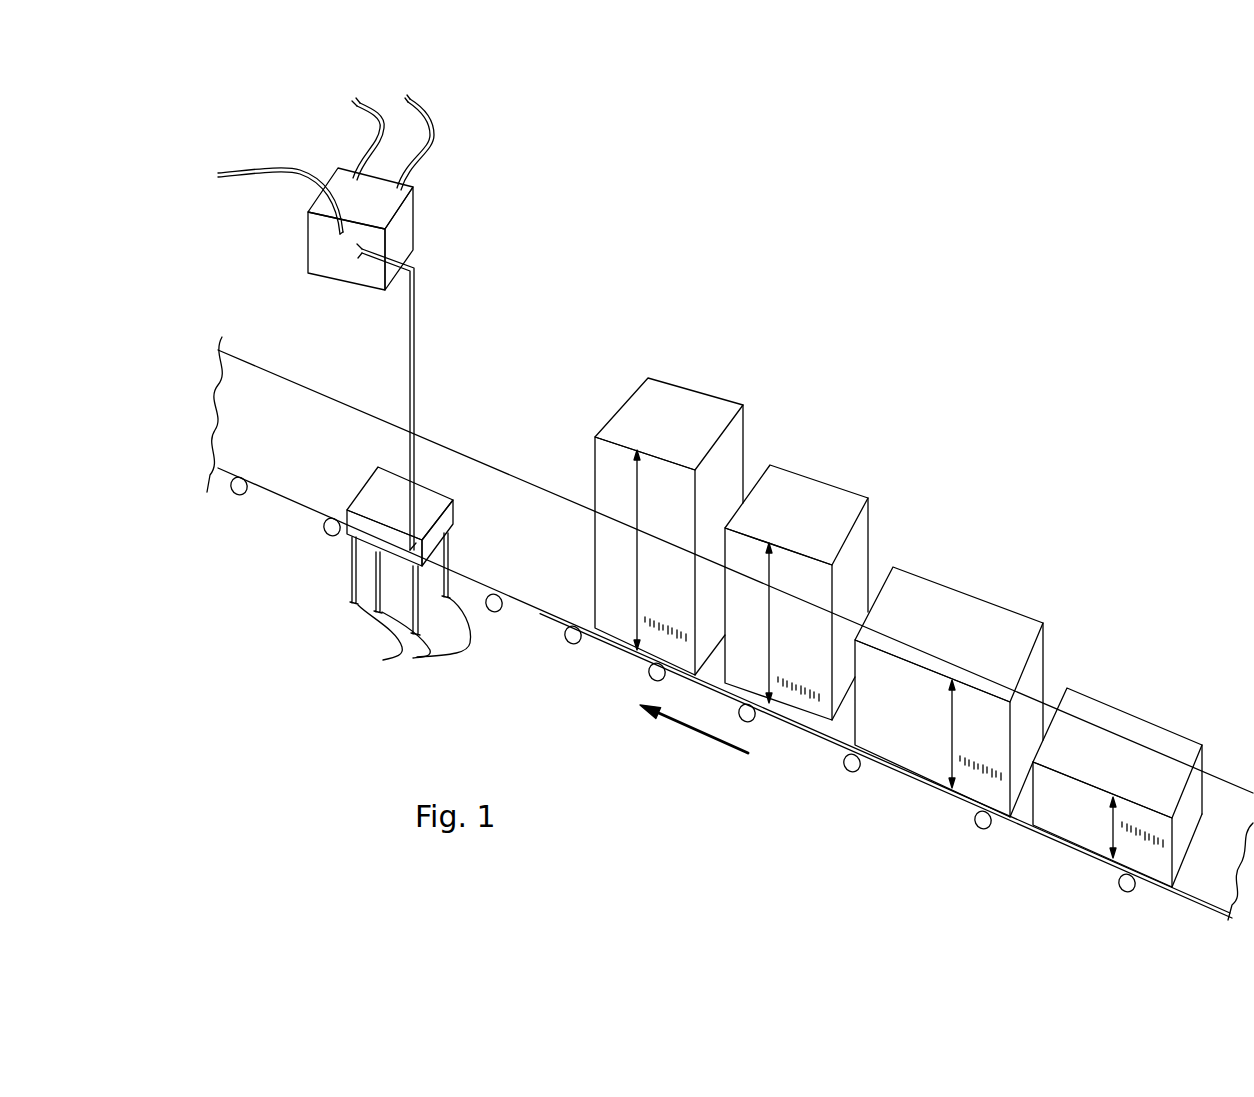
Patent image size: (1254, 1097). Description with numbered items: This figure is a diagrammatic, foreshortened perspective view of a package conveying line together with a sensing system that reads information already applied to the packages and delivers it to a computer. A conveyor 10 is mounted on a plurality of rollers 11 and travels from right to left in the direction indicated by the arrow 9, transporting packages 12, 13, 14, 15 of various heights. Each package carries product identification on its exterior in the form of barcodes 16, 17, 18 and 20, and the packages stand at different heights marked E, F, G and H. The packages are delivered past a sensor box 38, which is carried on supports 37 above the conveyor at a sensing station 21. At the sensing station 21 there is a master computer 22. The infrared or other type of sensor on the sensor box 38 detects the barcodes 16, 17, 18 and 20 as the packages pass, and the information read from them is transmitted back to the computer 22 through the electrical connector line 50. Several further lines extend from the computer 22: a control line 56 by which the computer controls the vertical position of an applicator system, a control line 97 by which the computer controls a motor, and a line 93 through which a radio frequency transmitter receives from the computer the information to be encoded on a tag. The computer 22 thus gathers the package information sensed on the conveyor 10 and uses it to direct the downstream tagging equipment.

The arrow 9 is at (707, 733).
The conveyor 10 is at (715, 675).
The rollers 11 is at (847, 766).
The package 12 is at (733, 437).
The package 13 is at (847, 502).
The package 14 is at (940, 606).
The package 15 is at (1113, 727).
The barcode 16 is at (670, 628).
The barcode 17 is at (805, 684).
The barcode 18 is at (987, 763).
The barcode 20 is at (1140, 831).
The sensing station 21 is at (331, 555).
The master computer 22 is at (377, 180).
The supports 37 is at (413, 657).
The sensor box 38 is at (447, 522).
The electrical connector line 50 is at (415, 367).
The control line 56 is at (281, 170).
The line 93 is at (380, 125).
The control line 97 is at (430, 142).